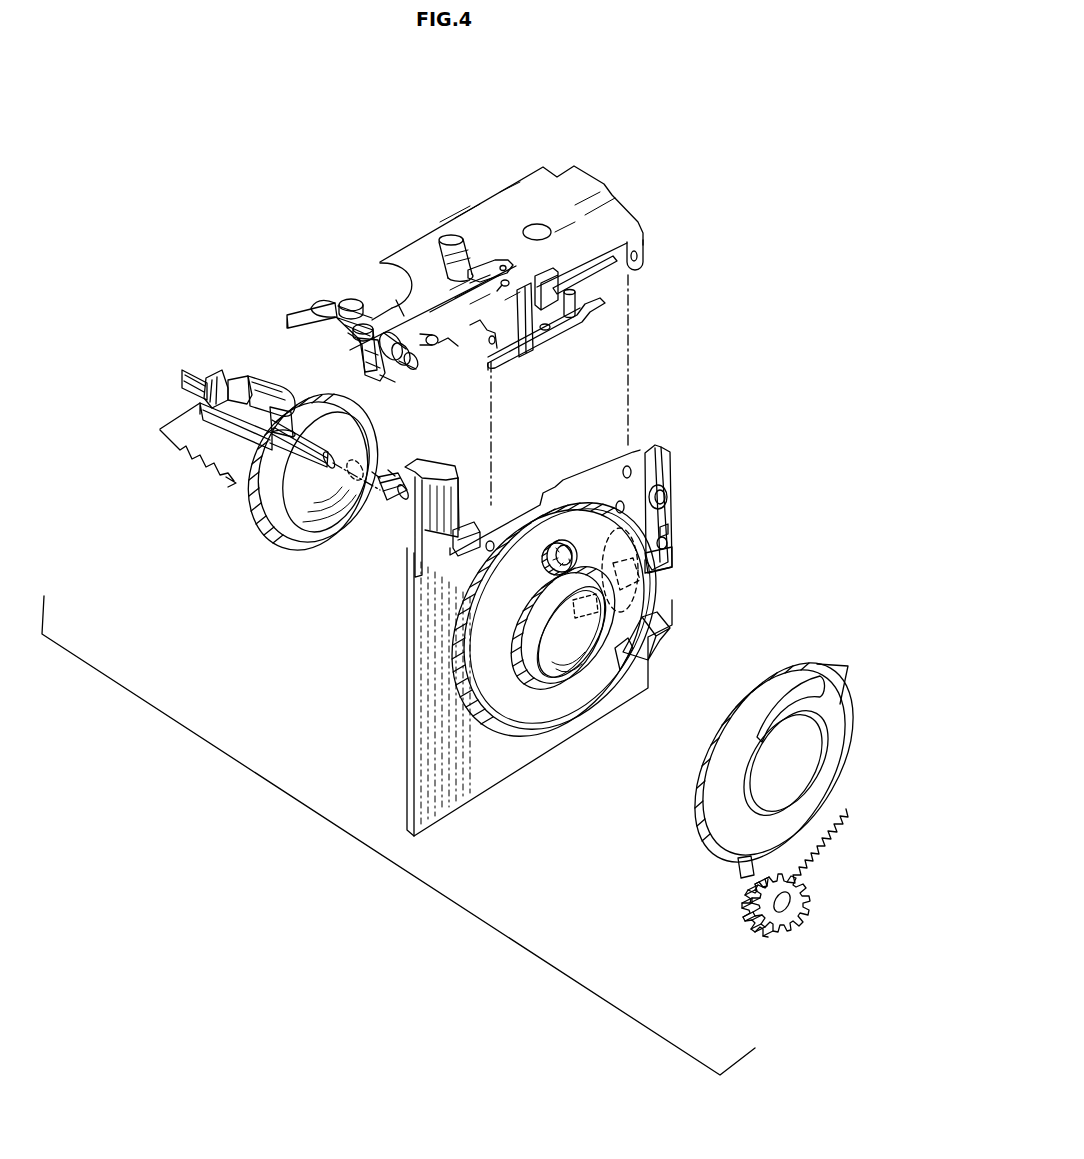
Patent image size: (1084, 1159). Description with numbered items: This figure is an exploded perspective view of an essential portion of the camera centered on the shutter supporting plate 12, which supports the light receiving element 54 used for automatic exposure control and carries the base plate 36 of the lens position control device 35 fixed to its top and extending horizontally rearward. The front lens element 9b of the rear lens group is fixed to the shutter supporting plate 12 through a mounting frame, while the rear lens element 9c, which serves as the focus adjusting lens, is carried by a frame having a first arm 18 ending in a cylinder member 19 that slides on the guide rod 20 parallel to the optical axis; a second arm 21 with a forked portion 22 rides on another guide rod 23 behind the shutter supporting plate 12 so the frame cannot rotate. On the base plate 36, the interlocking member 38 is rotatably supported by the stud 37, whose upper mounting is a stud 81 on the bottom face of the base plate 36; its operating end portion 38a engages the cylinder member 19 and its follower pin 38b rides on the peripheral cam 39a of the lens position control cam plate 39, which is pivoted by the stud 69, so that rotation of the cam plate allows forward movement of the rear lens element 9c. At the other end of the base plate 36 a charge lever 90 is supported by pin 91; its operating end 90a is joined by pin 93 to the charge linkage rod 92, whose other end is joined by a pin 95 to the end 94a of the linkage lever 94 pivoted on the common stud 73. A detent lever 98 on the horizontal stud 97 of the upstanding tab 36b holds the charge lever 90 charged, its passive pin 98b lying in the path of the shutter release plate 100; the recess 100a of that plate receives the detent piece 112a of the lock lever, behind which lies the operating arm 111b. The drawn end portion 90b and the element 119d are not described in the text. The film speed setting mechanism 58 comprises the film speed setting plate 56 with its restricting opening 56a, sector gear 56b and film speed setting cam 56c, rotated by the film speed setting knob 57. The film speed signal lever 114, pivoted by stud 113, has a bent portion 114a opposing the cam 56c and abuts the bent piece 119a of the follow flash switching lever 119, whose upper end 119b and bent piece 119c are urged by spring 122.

The front lens element of the rear elements 9b is at (553, 657).
The rear lens element 9c is at (293, 514).
The shutter supporting plate 12 is at (416, 699).
The first arm 18 is at (257, 462).
The cylinder member 19 is at (262, 396).
The guide rod 20 is at (315, 466).
The second arm 21 is at (377, 470).
The forked portion 22 is at (394, 468).
The guide rod 23 is at (393, 508).
The lens position control device 35 is at (582, 293).
The base plate 36 is at (486, 210).
The upstanding tab 36b is at (371, 377).
The stud 37 is at (553, 328).
The interlocking member 38 is at (524, 350).
The operating end portion 38a is at (505, 374).
The follower pin 38b is at (578, 306).
The lens position control cam plate 39 is at (552, 278).
The peripheral cam 39a is at (580, 259).
The light receiving element 54 is at (578, 553).
The film speed setting plate 56 is at (718, 796).
The restricting opening 56a is at (801, 686).
The sector gear 56b is at (818, 855).
The film speed setting cam 56c is at (850, 741).
The film speed setting knob 57 is at (774, 937).
The film speed setting mechanism 58 is at (742, 904).
The stud 69 is at (536, 226).
The common stud 73 is at (451, 234).
The stud 81 is at (501, 286).
The charge lever 90 is at (323, 306).
The operating end 90a is at (362, 358).
The lever arm 90b is at (291, 314).
The pin 91 is at (351, 299).
The charge linkage rod 92 is at (398, 317).
The pin 93 is at (357, 338).
The linkage lever 94 is at (463, 243).
The end of linkage lever 94a is at (468, 294).
The pin 95 is at (402, 286).
The horizontal stud 97 is at (417, 373).
The detent lever 98 is at (431, 346).
The passive pin 98b is at (460, 360).
The shutter release plate 100 is at (433, 468).
The recess 100a is at (458, 530).
The operating arm 111b is at (488, 540).
The detent piece 112a is at (468, 530).
The stud 113 is at (636, 580).
The film speed signal lever 114 is at (642, 606).
The bent portion 114a is at (652, 645).
The follow flash switching lever 119 is at (668, 503).
The bent piece 119a is at (672, 560).
The upper end 119b is at (659, 450).
The bent piece 119c is at (667, 542).
The lever tab 119d is at (668, 528).
The spring 122 is at (620, 500).